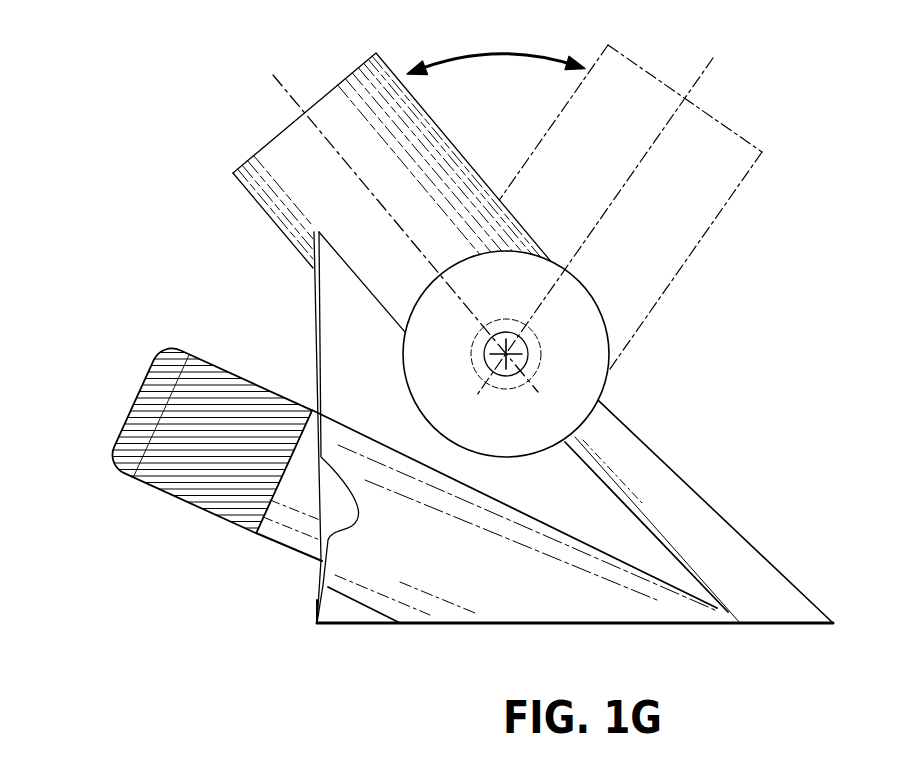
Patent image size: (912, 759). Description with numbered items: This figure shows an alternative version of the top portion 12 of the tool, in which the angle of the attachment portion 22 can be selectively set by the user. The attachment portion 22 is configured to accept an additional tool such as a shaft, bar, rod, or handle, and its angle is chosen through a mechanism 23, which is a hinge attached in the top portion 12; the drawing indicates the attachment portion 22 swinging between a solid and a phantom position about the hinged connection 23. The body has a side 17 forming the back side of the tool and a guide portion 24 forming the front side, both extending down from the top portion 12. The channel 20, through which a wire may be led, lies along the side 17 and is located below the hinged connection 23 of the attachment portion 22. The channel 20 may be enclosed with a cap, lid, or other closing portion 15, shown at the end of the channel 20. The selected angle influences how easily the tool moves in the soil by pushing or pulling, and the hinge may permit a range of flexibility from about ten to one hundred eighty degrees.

The top portion 12 is at (350, 347).
The closing portion 15 is at (108, 393).
The side 17 is at (738, 545).
The channel 20 is at (453, 557).
The attachment portion 22 is at (273, 138).
The mechanism 23 is at (607, 347).
The guide portion 24 is at (323, 612).